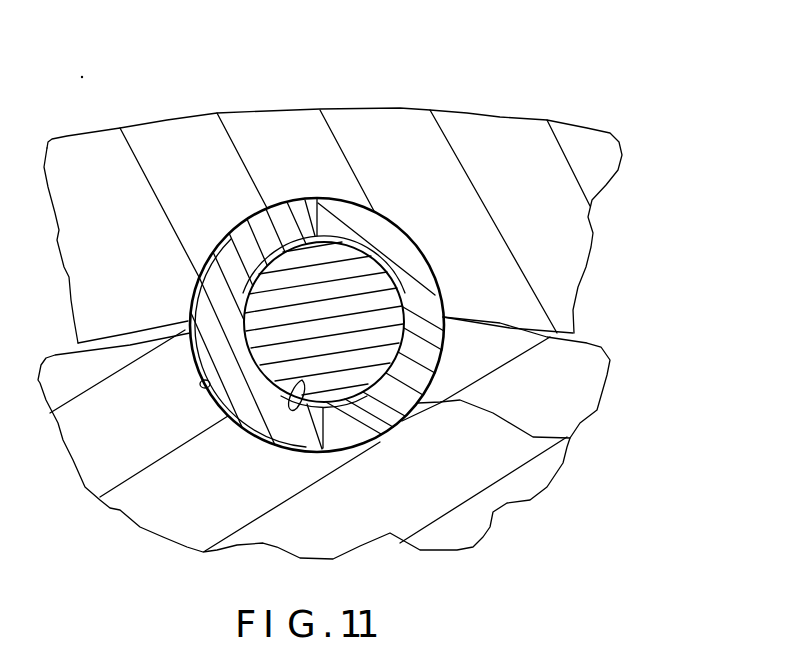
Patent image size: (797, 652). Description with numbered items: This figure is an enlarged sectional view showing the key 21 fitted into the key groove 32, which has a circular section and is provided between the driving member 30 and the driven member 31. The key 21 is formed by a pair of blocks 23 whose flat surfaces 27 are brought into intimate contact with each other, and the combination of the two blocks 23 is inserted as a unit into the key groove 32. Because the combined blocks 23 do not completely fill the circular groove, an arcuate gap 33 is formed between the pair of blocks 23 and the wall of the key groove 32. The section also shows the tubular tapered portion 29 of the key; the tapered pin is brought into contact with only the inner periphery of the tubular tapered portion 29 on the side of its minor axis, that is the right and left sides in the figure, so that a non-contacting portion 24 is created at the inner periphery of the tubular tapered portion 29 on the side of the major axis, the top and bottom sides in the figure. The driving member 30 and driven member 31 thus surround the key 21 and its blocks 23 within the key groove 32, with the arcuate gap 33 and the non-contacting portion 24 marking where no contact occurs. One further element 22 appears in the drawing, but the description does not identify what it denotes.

The key 21 is at (292, 192).
The shaft 22 is at (388, 282).
The pair of blocks 23 is at (403, 242).
The non-contacting portion 24 is at (358, 208).
The flat surfaces 27 is at (320, 200).
The tubular tapered portion 29 is at (302, 382).
The driving member 30 is at (594, 345).
The driven member 31 is at (526, 118).
The key groove 32 is at (570, 438).
The arcuate gap 33 is at (213, 245).